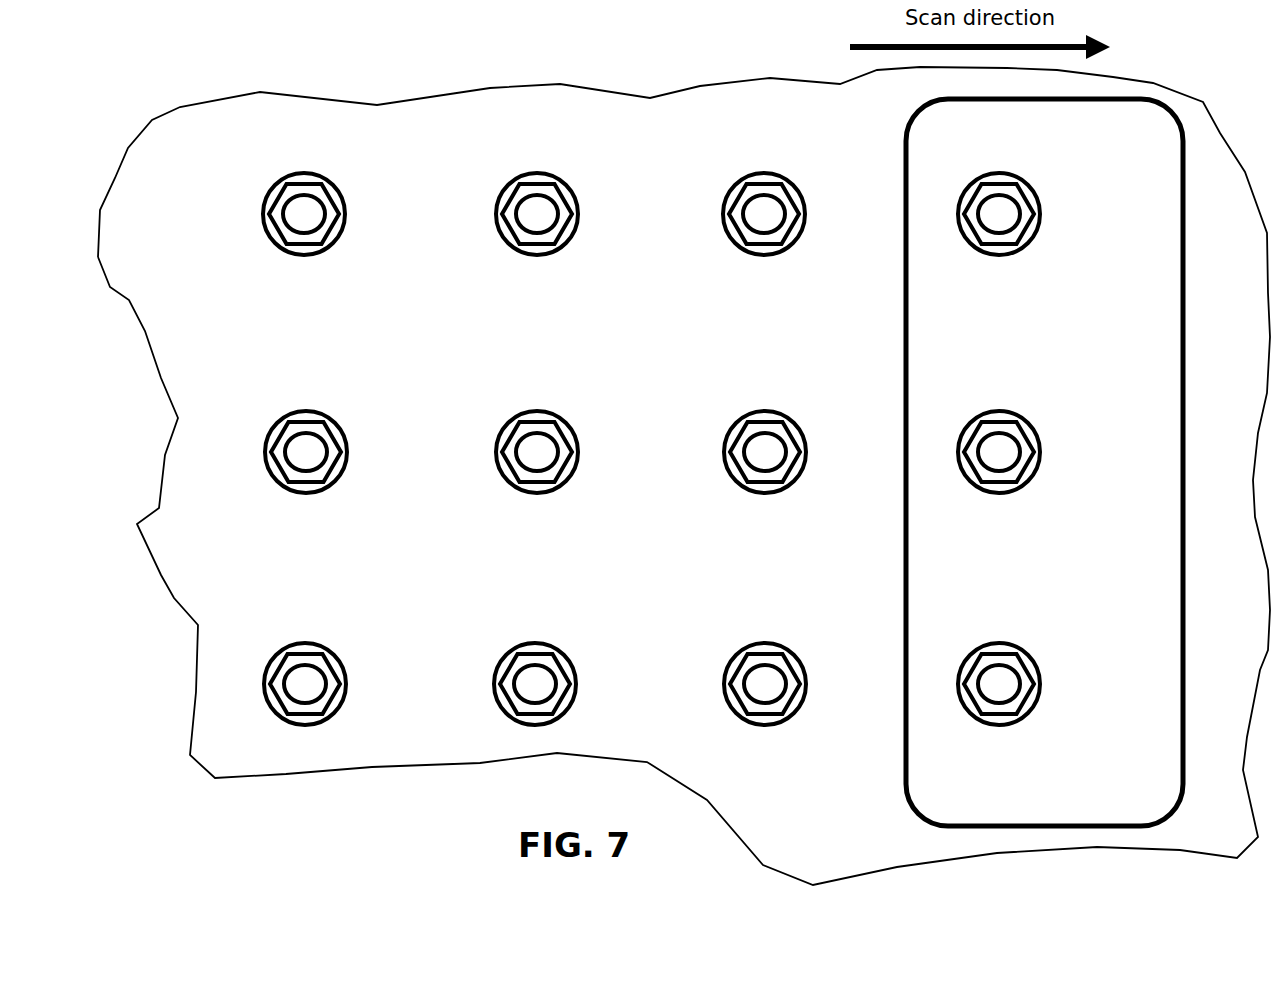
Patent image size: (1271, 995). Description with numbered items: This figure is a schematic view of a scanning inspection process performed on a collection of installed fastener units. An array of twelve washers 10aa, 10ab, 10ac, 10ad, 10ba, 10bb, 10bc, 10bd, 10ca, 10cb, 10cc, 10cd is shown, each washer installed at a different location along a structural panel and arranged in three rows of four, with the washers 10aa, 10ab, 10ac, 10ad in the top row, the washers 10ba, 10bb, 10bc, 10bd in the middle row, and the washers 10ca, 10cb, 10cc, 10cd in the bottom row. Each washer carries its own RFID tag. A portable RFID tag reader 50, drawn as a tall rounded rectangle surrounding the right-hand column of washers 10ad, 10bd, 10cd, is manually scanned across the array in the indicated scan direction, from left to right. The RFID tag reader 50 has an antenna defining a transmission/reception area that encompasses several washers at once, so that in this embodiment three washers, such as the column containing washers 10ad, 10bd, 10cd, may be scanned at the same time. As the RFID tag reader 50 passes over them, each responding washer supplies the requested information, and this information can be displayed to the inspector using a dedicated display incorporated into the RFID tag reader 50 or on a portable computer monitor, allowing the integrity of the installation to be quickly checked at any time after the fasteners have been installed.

The washer 10aa is at (342, 184).
The washer 10ab is at (575, 184).
The washer 10ac is at (802, 184).
The washer 10ad is at (1037, 184).
The washer 10ba is at (344, 422).
The washer 10bb is at (575, 422).
The washer 10bc is at (803, 422).
The washer 10bd is at (1037, 422).
The washer 10ca is at (343, 654).
The washer 10cb is at (573, 654).
The washer 10cc is at (803, 654).
The washer 10cd is at (1037, 654).
The RFID tag reader 50 is at (1100, 790).